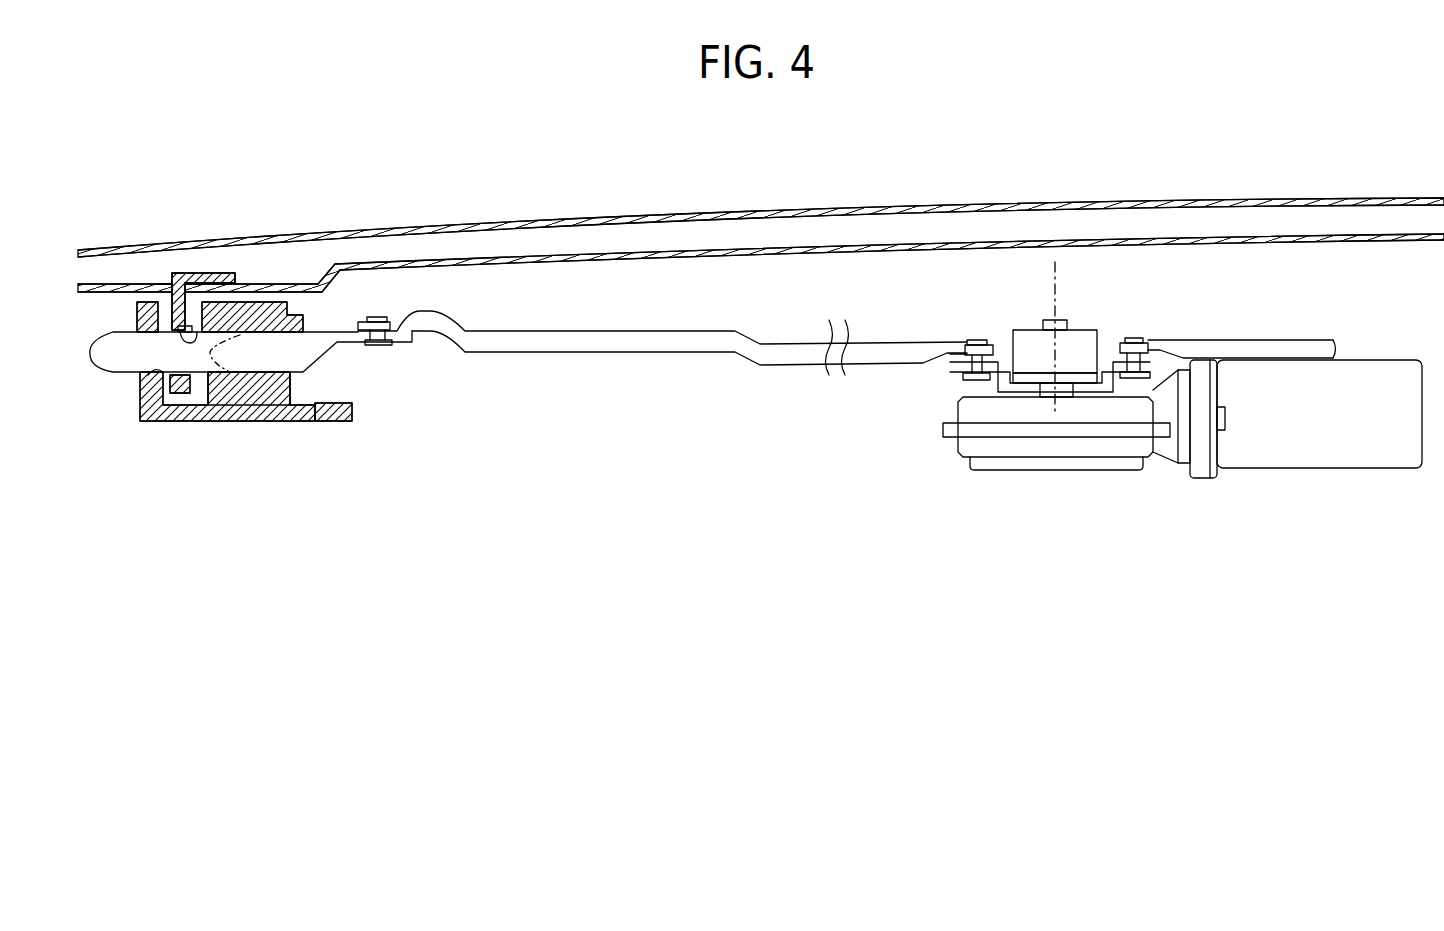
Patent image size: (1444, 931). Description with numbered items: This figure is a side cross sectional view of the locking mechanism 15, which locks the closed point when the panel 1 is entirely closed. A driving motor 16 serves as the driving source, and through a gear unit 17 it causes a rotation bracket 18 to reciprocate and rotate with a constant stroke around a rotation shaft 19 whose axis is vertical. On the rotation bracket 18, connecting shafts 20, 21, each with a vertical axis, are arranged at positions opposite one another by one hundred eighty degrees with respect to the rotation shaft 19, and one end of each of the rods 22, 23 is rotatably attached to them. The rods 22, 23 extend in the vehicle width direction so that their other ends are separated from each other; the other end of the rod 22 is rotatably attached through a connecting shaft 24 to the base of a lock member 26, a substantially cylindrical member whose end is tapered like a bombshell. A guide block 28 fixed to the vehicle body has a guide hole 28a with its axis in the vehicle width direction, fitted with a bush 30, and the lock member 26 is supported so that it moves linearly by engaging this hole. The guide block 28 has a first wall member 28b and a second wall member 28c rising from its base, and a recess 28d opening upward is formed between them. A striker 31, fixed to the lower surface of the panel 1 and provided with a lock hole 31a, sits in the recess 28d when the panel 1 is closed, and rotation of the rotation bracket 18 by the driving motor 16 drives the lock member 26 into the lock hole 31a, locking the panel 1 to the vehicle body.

The panel 1 is at (610, 253).
The locking mechanism 15 is at (363, 488).
The driving motor 16 is at (1288, 455).
The gear unit 17 is at (1025, 443).
The rotation bracket 18 is at (960, 368).
The rotation shaft 19 is at (1053, 272).
The connecting shaft 20 is at (978, 340).
The connecting shaft 21 is at (1130, 338).
The rod 22 is at (593, 344).
The rod 23 is at (1268, 343).
The connecting shaft 24 is at (375, 346).
The lock member 26 is at (317, 350).
The guide block 28 is at (290, 423).
The guide hole 28a is at (195, 380).
The first wall member 28b is at (236, 398).
The second wall member 28c is at (134, 392).
The recess 28d is at (163, 299).
The bush 30 is at (310, 422).
The striker 31 is at (178, 283).
The lock hole 31a is at (190, 330).